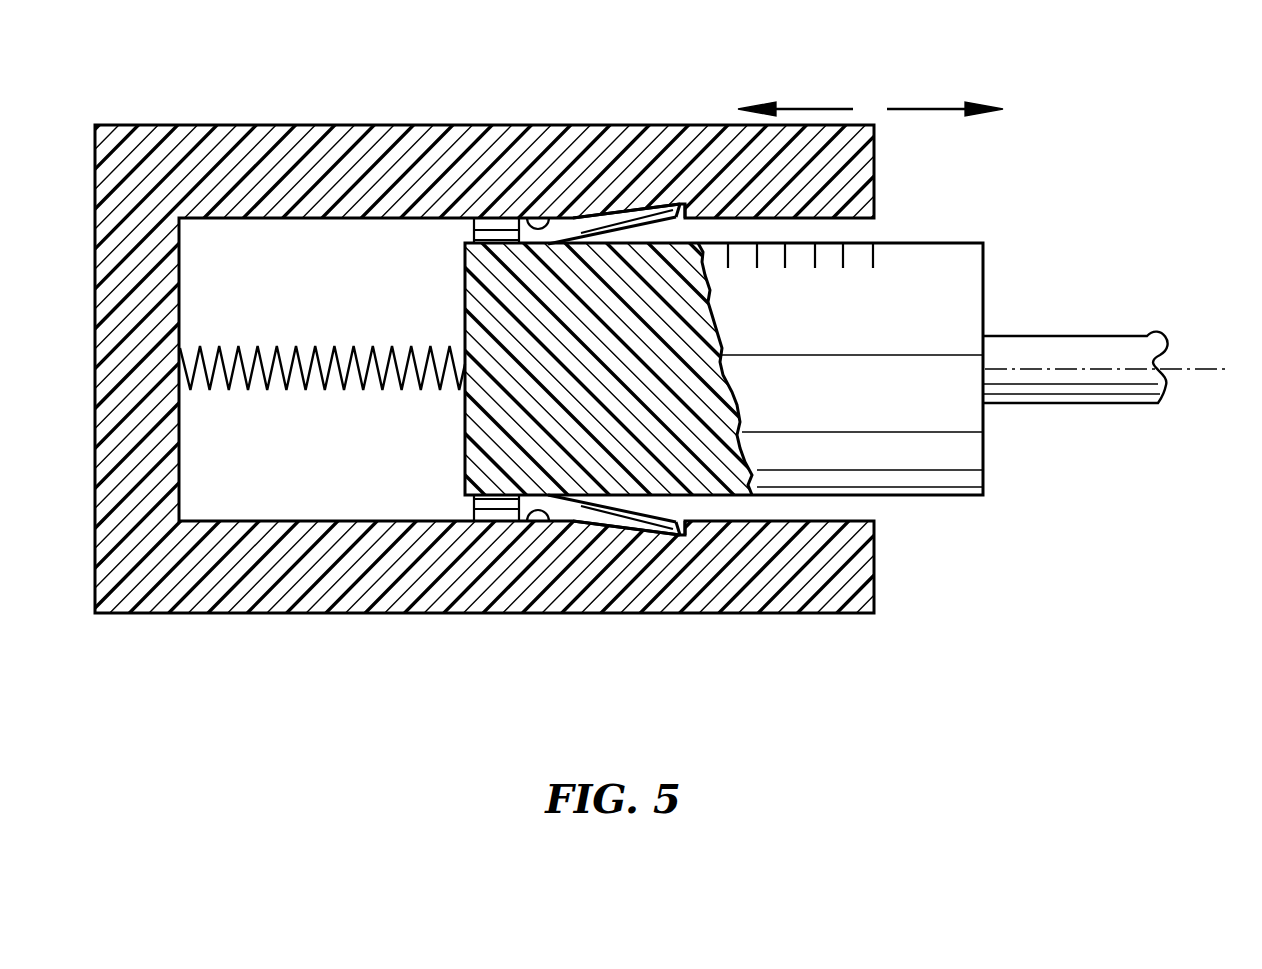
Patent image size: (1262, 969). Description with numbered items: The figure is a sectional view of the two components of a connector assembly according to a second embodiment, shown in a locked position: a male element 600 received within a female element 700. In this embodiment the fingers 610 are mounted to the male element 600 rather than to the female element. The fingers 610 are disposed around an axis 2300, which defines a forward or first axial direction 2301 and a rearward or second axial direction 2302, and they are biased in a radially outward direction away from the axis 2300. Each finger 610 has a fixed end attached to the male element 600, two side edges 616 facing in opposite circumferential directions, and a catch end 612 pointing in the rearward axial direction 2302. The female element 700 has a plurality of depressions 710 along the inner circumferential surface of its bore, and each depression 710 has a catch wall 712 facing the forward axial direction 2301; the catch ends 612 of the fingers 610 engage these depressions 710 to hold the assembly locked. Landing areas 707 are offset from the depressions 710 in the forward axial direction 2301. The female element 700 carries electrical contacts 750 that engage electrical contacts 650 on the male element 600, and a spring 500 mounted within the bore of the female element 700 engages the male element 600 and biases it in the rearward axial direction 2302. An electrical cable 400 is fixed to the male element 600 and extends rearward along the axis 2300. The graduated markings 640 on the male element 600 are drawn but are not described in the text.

The female element 700 is at (875, 150).
The male element 600 is at (983, 446).
The scale markings 640 is at (815, 253).
The electrical cable 400 is at (1123, 400).
The axis 2300 is at (1192, 369).
The forward axial direction 2301 is at (807, 108).
The rearward axial direction 2302 is at (927, 108).
The spring 500 is at (228, 392).
The electrical contacts 750 is at (502, 218).
The electrical contacts 650 is at (474, 236).
The landing areas 707 is at (525, 217).
The fingers 610 is at (578, 222).
The side edges 616 is at (592, 230).
The depressions 710 is at (613, 226).
The catch end 612 is at (674, 205).
The catch wall 712 is at (690, 203).